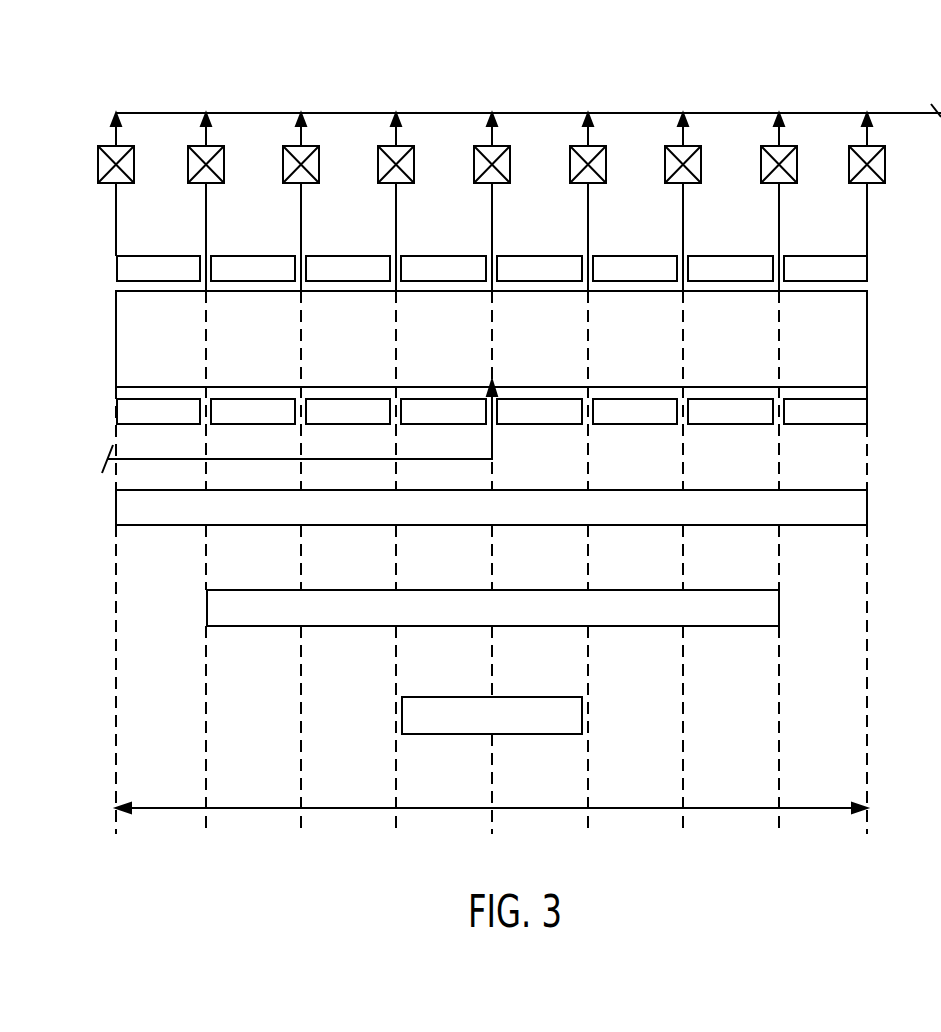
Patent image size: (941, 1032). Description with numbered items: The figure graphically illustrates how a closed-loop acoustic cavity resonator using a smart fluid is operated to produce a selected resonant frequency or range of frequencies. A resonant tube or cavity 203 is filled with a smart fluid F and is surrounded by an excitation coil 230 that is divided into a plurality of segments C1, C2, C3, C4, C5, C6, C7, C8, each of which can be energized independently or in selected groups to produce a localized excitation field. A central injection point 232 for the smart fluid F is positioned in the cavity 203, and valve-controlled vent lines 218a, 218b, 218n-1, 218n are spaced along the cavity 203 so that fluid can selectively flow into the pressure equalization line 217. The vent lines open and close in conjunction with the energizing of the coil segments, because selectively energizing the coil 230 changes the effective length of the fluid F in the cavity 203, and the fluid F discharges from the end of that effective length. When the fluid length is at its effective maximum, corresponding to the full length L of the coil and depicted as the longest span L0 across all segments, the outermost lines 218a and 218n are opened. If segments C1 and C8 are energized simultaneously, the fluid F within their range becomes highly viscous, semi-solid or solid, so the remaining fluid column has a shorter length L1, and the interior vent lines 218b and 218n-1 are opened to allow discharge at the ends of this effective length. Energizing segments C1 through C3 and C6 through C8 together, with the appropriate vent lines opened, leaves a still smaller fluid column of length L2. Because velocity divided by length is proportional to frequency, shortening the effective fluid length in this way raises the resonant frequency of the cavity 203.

The pressure equalization line 217 is at (522, 113).
The vent line 218a is at (123, 146).
The vent line 218b is at (225, 153).
The vent line 218n-1 is at (770, 147).
The vent line 218n is at (855, 150).
The resonant cavity 203 is at (180, 349).
The excitation coil 230 is at (370, 397).
The injection point 232 is at (496, 393).
The coil segment C1 is at (150, 266).
The coil segment C2 is at (242, 266).
The coil segment C3 is at (337, 266).
The coil segment C4 is at (433, 266).
The coil segment C5 is at (529, 266).
The coil segment C6 is at (624, 266).
The coil segment C7 is at (720, 266).
The coil segment C8 is at (812, 266).
The smart fluid F is at (450, 351).
The level 0 L0 is at (505, 520).
The fluid length L1 is at (505, 621).
The fluid length L2 is at (505, 730).
The coil length L is at (802, 808).